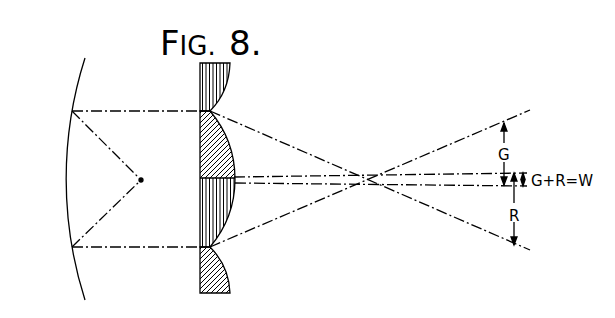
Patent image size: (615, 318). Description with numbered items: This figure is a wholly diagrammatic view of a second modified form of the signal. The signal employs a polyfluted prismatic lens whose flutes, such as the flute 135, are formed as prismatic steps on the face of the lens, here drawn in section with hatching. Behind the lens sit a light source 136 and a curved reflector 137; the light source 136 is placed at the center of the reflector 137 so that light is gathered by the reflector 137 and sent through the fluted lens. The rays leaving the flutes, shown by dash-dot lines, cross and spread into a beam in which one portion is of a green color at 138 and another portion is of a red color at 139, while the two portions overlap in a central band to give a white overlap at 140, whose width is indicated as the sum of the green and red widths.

The flute 135 is at (223, 143).
The light source 136 is at (141, 183).
The reflector 137 is at (72, 255).
The green color beam portion 138 is at (498, 133).
The red color beam portion 139 is at (510, 230).
The white overlap 140 is at (522, 177).